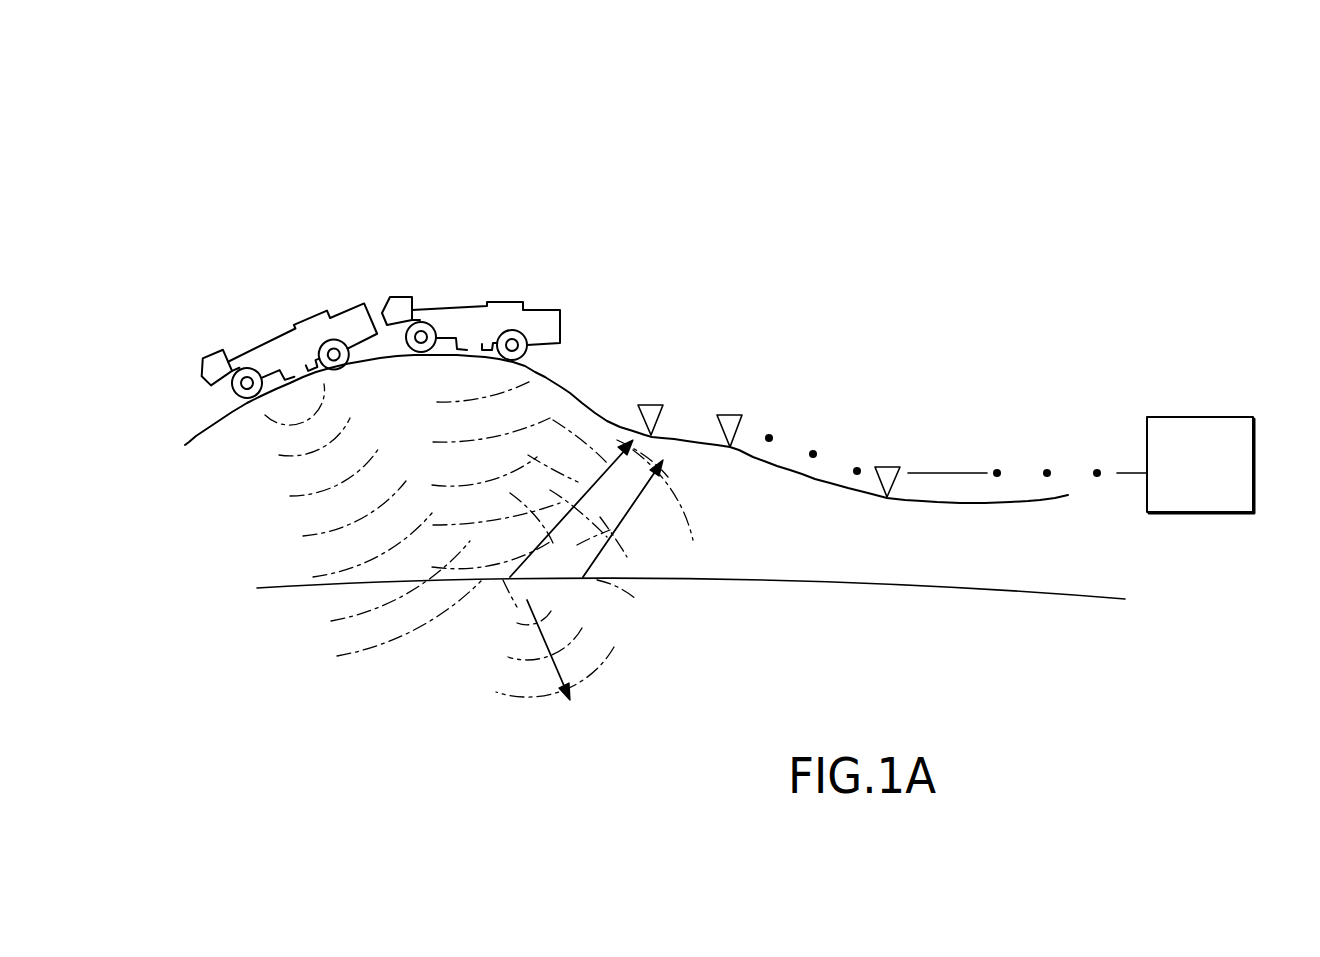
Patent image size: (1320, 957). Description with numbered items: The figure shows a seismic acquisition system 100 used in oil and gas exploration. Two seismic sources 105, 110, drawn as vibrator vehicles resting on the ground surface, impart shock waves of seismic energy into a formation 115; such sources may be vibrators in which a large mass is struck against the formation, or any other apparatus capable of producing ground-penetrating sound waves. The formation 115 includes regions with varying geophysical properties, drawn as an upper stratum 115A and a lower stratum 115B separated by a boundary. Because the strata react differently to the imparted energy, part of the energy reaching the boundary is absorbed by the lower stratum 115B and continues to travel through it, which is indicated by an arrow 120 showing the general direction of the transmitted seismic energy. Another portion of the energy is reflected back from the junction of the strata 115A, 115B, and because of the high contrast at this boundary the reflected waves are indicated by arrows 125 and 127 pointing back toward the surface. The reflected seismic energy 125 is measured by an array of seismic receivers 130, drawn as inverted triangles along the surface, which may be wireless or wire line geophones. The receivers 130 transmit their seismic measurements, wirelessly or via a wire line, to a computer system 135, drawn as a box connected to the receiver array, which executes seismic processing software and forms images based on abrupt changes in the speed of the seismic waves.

The seismic acquisition system 100 is at (250, 187).
The seismic source 105 is at (450, 315).
The seismic source 110 is at (290, 338).
The formation 115 is at (237, 735).
The stratum 115A is at (290, 581).
The stratum 115B is at (290, 635).
The arrow indicating transmitted seismic energy 120 is at (558, 668).
The arrow indicating reflected seismic energy 125 is at (623, 518).
The arrow indicating reflected seismic energy 127 is at (571, 508).
The seismic receivers 130 is at (627, 372).
The computer system 135 is at (1181, 479).